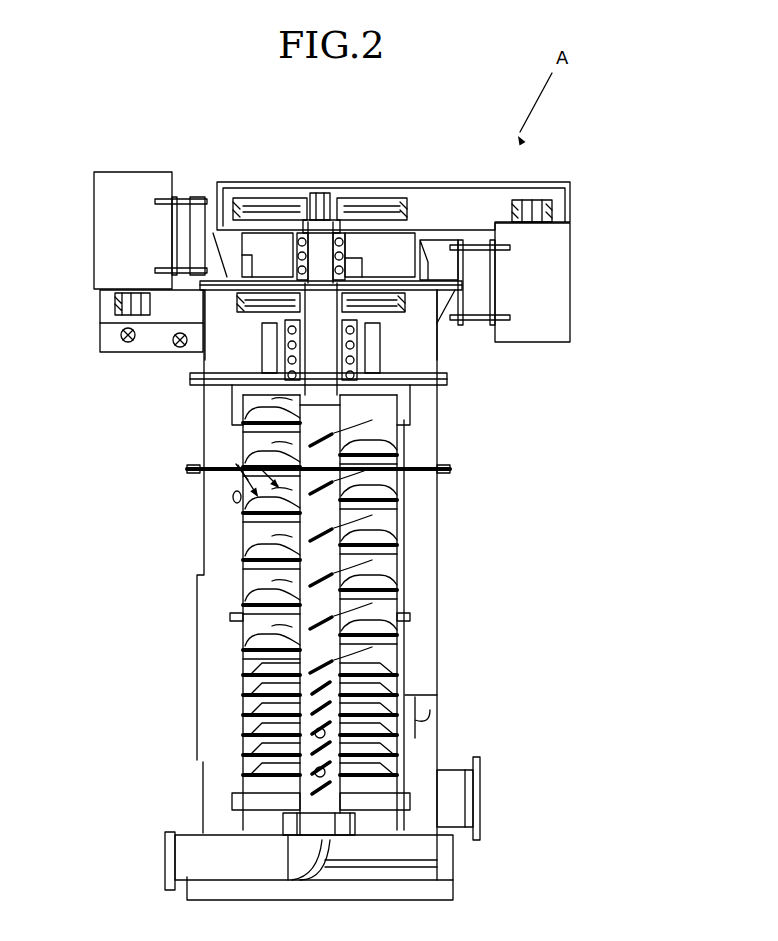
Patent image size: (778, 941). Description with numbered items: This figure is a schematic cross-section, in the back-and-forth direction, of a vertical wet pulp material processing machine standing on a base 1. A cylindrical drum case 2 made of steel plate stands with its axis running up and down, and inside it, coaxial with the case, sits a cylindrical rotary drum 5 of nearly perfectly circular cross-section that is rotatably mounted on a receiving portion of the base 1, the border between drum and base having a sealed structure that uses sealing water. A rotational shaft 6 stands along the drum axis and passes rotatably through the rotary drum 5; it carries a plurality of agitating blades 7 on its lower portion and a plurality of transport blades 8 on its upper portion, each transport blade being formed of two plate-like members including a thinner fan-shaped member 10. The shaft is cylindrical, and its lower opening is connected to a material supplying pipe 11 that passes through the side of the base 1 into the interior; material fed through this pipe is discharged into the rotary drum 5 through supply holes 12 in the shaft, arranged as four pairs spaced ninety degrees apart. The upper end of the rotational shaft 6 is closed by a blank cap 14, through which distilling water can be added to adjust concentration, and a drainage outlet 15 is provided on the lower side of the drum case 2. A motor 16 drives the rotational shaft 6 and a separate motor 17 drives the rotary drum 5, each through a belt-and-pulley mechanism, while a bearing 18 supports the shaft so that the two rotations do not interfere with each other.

The base 1 is at (190, 887).
The cylindrical drum case 2 is at (222, 428).
The rotary drum 5 is at (237, 531).
The rotational shaft 6 is at (318, 560).
The agitating blades 7 is at (385, 672).
The transport blades 8 is at (236, 464).
The fan-shaped member 10 is at (437, 633).
The material supplying pipe 11 is at (187, 858).
The supply holes 12 is at (243, 713).
The blank cap 14 is at (316, 192).
The drainage outlet 15 is at (457, 798).
The motor for the rotational shaft 16 is at (94, 240).
The motor for the rotary drum 17 is at (566, 268).
The bearing 18 is at (345, 248).